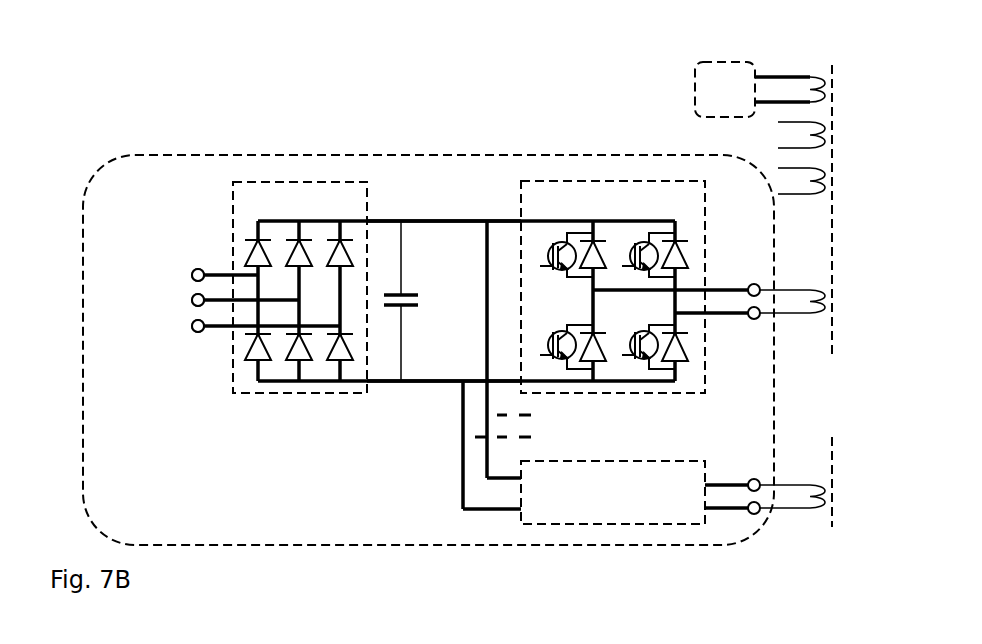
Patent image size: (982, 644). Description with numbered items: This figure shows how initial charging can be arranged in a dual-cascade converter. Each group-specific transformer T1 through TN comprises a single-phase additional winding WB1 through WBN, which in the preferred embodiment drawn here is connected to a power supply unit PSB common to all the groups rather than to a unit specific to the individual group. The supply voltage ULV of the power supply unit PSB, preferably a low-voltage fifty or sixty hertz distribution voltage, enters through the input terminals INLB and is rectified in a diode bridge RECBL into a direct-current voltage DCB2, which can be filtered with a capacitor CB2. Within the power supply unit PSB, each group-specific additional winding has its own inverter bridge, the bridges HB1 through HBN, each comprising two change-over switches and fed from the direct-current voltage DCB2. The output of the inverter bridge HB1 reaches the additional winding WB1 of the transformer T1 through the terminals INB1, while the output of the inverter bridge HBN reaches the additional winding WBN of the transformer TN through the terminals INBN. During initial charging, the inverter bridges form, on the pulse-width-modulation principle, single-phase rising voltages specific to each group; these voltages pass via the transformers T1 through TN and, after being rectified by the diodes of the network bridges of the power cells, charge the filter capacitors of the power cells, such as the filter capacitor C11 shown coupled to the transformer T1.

The power supply unit PSB is at (428, 338).
The diode bridge RECBL is at (454, 287).
The input terminals IN_LB INLB is at (258, 288).
The supply voltage ULV is at (160, 300).
The direct-current voltage DCB2 is at (449, 355).
The capacitor CB2 is at (409, 301).
The inverter bridge HB1 is at (635, 287).
The output terminals IN_B1 INB1 is at (750, 288).
The single-phase additional winding WB1 is at (792, 290).
The inverter bridge HBN is at (635, 492).
The output terminals IN_BN INBN is at (750, 483).
The single-phase additional winding WBN is at (792, 486).
The group-specific transformer T1 is at (810, 197).
The filter capacitor of a power cell C11 is at (760, 89).
The group-specific transformer TN is at (842, 467).